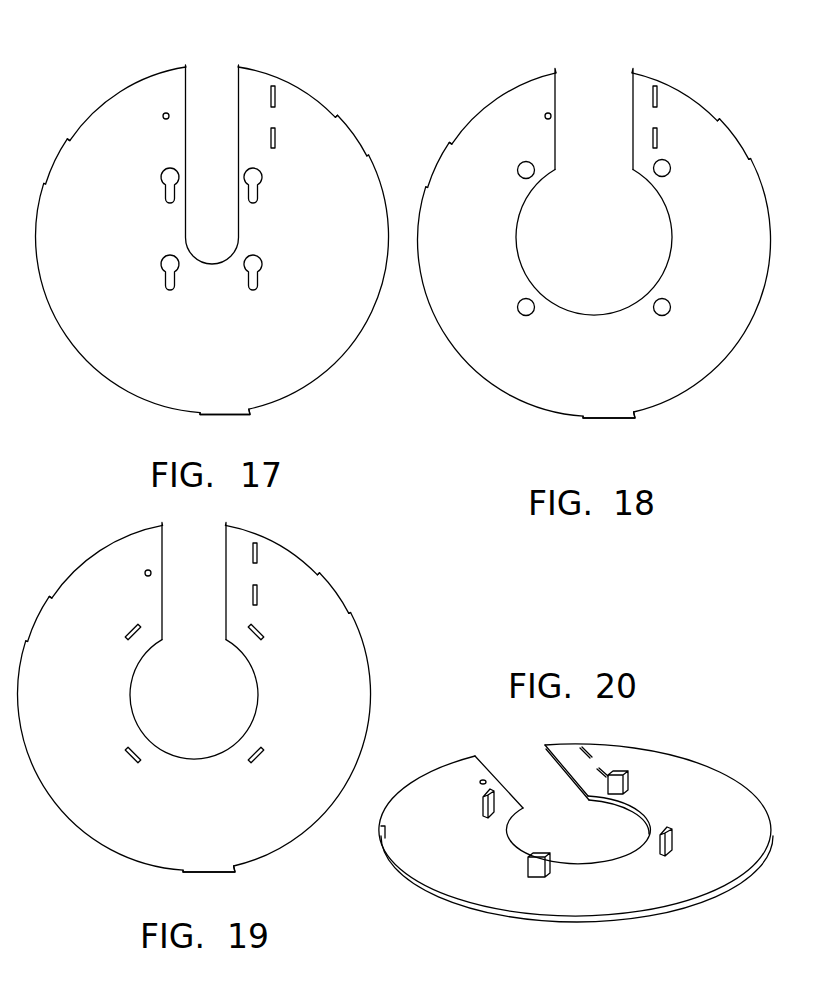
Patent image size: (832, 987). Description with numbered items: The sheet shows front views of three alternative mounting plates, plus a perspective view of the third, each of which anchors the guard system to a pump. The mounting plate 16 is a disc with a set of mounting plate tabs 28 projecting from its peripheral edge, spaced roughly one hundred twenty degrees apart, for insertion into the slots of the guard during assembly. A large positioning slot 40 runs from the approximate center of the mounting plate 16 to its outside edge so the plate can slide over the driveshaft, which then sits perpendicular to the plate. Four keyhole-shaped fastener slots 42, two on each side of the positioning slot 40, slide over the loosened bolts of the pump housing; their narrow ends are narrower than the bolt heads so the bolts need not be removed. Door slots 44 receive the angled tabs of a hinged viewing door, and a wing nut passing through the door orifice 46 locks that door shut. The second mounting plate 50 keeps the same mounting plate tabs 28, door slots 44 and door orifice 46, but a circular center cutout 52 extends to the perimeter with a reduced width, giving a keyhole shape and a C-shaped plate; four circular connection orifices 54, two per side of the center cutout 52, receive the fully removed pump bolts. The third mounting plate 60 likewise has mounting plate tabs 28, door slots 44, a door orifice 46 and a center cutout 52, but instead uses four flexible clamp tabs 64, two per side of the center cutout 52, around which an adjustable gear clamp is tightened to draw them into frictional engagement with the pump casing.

In FIG. 17, the mounting plate 16 is at (72, 70).
In FIG. 17, the mounting plate tabs 28 is at (50, 160).
In FIG. 18, the mounting plate tabs 28 is at (598, 419).
In FIG. 19, the mounting plate tabs 28 is at (40, 616).
In FIG. 20, the mounting plate tabs 28 is at (383, 830).
In FIG. 17, the positioning slot 40 is at (212, 95).
In FIG. 17, the fastener slots 42 is at (163, 195).
In FIG. 17, the door slots 44 is at (275, 138).
In FIG. 18, the door slots 44 is at (653, 137).
In FIG. 19, the door slots 44 is at (257, 597).
In FIG. 17, the door orifice 46 is at (165, 113).
In FIG. 18, the door orifice 46 is at (549, 113).
In FIG. 19, the door orifice 46 is at (147, 570).
In FIG. 18, the second mounting plate 50 is at (496, 58).
In FIG. 18, the center cutout 52 is at (623, 272).
In FIG. 19, the center cutout 52 is at (213, 703).
In FIG. 18, the connection orifices 54 is at (668, 162).
In FIG. 19, the third mounting plate 60 is at (77, 535).
In FIG. 20, the third mounting plate 60 is at (692, 710).
In FIG. 19, the clamp tabs 64 is at (267, 628).
In FIG. 20, the clamp tabs 64 is at (537, 866).